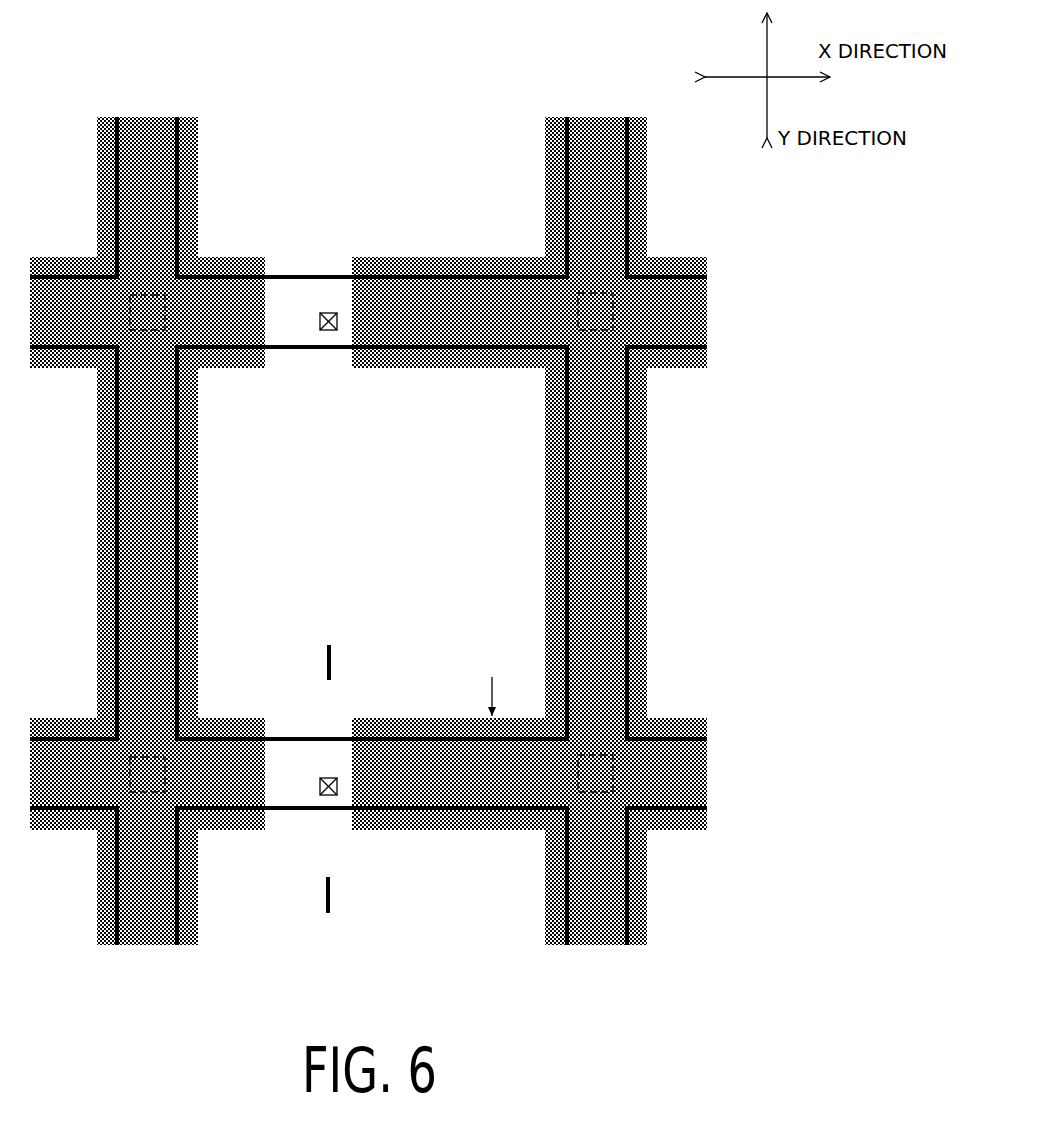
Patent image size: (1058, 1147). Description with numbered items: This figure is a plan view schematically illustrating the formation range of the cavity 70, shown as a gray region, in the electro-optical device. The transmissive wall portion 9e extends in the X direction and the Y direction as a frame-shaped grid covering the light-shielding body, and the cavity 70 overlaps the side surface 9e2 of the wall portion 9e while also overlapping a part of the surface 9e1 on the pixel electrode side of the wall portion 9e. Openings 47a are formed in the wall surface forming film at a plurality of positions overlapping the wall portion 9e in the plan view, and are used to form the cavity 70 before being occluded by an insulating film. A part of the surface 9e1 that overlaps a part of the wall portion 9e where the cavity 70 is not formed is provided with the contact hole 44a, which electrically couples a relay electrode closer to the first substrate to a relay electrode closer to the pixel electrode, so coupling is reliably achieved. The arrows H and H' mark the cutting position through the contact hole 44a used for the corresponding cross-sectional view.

The wall portion 9e is at (180, 577).
The surface on the pixel electrode side of the wall portion 9e1 is at (227, 750).
The side surface of the wall portion 9e2 is at (437, 740).
The openings 47a is at (130, 762).
The contact hole 44a is at (328, 796).
The cavity 70 is at (492, 832).
The section line H is at (361, 662).
The section line H' is at (362, 895).